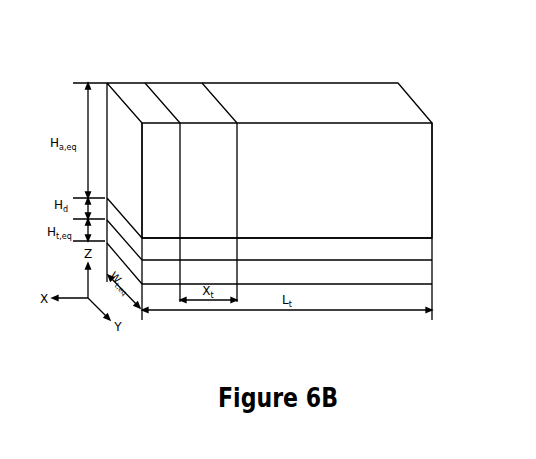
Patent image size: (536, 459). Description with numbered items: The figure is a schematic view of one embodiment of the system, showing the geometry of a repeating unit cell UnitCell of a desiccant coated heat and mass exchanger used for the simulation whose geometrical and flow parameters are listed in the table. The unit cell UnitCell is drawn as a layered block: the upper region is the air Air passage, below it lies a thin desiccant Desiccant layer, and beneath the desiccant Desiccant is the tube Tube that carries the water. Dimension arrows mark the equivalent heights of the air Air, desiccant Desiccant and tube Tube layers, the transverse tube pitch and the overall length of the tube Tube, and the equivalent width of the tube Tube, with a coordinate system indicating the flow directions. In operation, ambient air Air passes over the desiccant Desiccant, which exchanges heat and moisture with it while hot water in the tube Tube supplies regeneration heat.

The air Air is at (269, 182).
The desiccant Desiccant is at (269, 240).
The tube Tube is at (269, 263).
The unit cell UnitCell is at (237, 150).